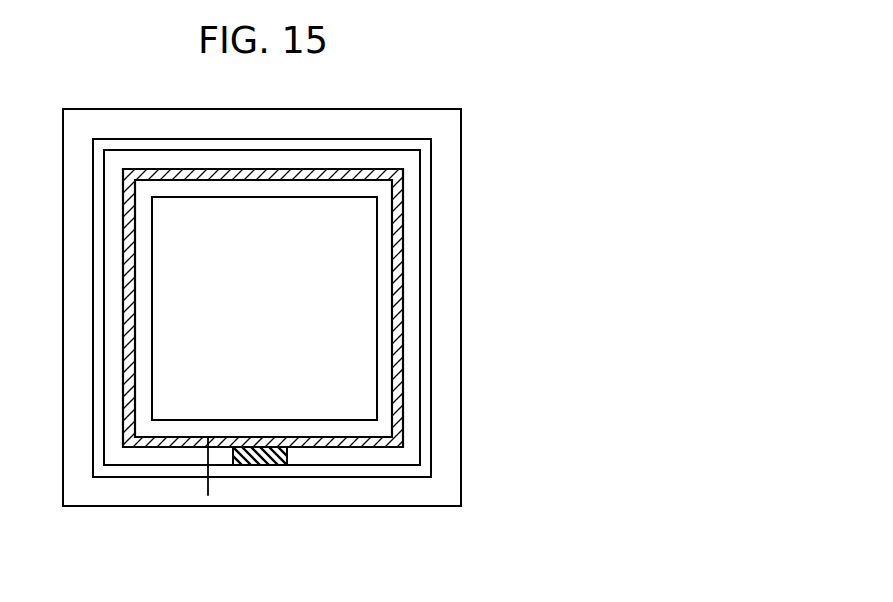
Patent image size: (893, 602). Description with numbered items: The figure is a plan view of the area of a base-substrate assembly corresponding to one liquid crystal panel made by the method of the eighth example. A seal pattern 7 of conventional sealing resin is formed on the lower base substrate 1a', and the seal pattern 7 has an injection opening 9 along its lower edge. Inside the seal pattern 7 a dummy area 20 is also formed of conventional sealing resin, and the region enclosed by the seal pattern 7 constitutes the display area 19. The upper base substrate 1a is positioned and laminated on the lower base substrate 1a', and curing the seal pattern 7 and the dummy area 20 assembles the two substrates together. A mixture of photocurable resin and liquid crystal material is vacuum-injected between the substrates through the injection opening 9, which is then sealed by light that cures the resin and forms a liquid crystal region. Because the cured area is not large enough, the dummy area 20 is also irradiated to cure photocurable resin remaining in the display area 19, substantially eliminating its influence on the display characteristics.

The upper base substrate 1a is at (331, 284).
The lower base substrate 1a' is at (326, 307).
The seal pattern 7 is at (411, 338).
The display area 19 is at (353, 375).
The injection opening 9 is at (288, 452).
The dummy area 20 is at (208, 495).